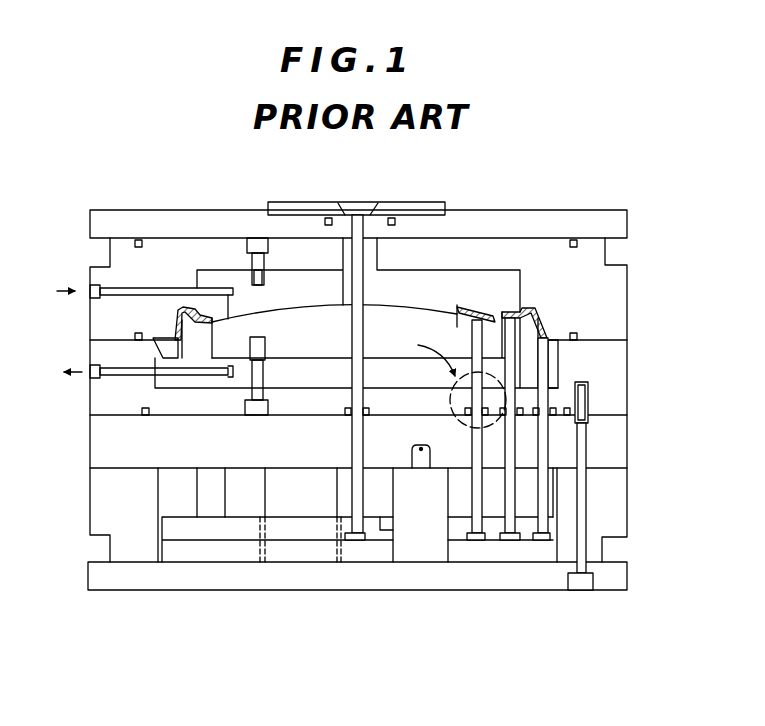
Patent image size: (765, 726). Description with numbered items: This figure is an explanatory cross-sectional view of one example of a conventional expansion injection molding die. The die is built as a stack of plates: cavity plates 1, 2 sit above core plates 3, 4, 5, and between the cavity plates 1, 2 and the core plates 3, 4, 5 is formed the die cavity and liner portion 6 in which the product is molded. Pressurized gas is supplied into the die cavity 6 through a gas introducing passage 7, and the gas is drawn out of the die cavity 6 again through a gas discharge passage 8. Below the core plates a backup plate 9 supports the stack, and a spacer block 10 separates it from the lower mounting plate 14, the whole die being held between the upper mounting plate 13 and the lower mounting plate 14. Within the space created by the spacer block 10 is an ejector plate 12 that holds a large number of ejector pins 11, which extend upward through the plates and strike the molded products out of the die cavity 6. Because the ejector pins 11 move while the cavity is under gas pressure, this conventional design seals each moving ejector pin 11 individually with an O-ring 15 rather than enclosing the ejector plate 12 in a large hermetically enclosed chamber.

The cavity plate 1 is at (618, 310).
The cavity plate 2 is at (480, 278).
The core plate 3 is at (436, 320).
The core plate 4 is at (528, 327).
The core plate 5 is at (618, 376).
The die cavity and liner portion 6 is at (186, 308).
The gas introducing passage 7 is at (158, 288).
The gas discharge passage 8 is at (125, 374).
The backup plate 9 is at (618, 448).
The spacer block 10 is at (95, 493).
The ejector pins 11 is at (476, 498).
The ejector plate 12 is at (542, 553).
The upper mounting plate 13 is at (610, 222).
The lower mounting plate 14 is at (612, 582).
The O-ring 15 is at (468, 415).